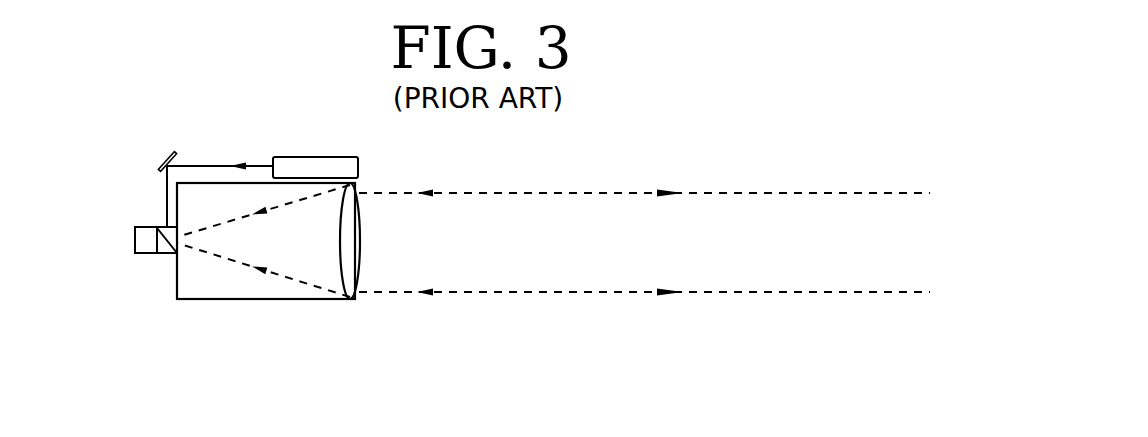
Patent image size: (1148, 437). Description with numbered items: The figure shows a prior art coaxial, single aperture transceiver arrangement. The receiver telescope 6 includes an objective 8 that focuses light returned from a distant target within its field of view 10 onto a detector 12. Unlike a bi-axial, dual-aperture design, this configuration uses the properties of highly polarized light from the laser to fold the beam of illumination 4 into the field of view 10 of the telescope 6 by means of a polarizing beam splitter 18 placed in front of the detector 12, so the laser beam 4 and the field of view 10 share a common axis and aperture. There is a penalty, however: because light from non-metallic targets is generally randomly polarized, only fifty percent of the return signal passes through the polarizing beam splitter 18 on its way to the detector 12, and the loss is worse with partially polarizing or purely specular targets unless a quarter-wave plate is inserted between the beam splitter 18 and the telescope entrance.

The beam of illumination 4 is at (601, 255).
The receiver telescope 6 is at (256, 330).
The objective 8 is at (348, 240).
The field of view 10 is at (645, 255).
The detector 12 is at (152, 205).
The polarizing beam splitter 18 is at (167, 270).